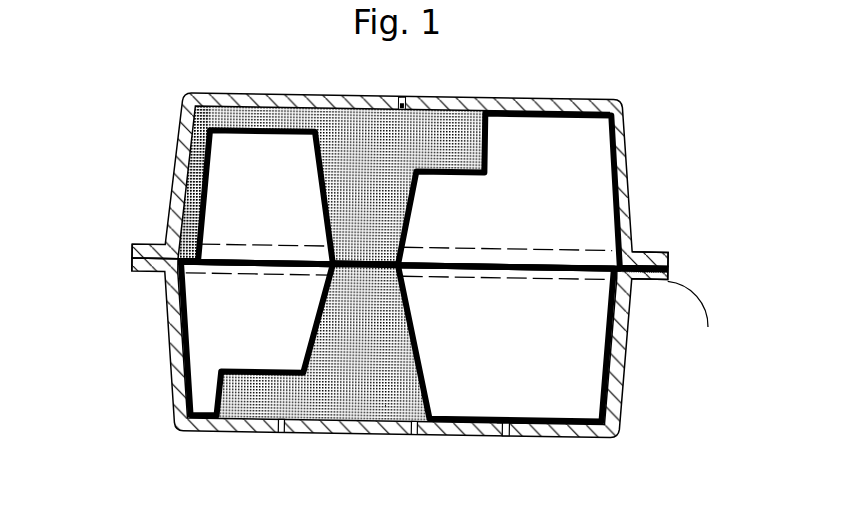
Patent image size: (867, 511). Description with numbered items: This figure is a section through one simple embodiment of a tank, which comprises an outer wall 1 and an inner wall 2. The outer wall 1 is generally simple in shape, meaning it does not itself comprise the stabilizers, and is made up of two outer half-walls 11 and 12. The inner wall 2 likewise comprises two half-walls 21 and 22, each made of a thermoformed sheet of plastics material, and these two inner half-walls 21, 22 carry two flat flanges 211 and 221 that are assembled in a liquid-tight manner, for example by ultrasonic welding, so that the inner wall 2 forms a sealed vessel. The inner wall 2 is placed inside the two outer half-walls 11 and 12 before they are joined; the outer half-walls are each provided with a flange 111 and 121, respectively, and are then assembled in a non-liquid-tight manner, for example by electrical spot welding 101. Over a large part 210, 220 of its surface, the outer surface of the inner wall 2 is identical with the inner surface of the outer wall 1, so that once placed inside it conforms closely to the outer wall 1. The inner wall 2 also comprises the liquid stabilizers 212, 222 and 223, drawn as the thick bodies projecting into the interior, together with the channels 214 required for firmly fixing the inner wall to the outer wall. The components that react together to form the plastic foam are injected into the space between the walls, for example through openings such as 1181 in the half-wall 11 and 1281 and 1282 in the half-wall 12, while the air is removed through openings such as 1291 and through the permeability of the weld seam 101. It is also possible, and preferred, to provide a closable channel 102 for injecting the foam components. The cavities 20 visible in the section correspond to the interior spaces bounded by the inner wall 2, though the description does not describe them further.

The outer wall 1 is at (409, 276).
The half-wall 11 is at (405, 163).
The half-wall 12 is at (428, 376).
The flange 111 is at (633, 244).
The flange 121 is at (680, 306).
The electrical spot welding 101 is at (615, 318).
The closable channel 102 is at (132, 246).
The opening 1181 is at (402, 95).
The opening 1281 is at (284, 432).
The opening 1282 is at (510, 432).
The opening 1291 is at (419, 432).
The inner wall 2 is at (394, 265).
The cavity 20 is at (249, 203).
The half-wall 21 is at (364, 162).
The half-wall 22 is at (397, 364).
The part of surface 210 is at (600, 146).
The part of surface 220 is at (175, 351).
The flat flange 211 is at (637, 258).
The flat flange 221 is at (646, 267).
The liquid stabilizer 212 is at (384, 203).
The liquid stabilizer 222 is at (378, 336).
The liquid stabilizer 223 is at (510, 372).
The channel 214 is at (184, 191).